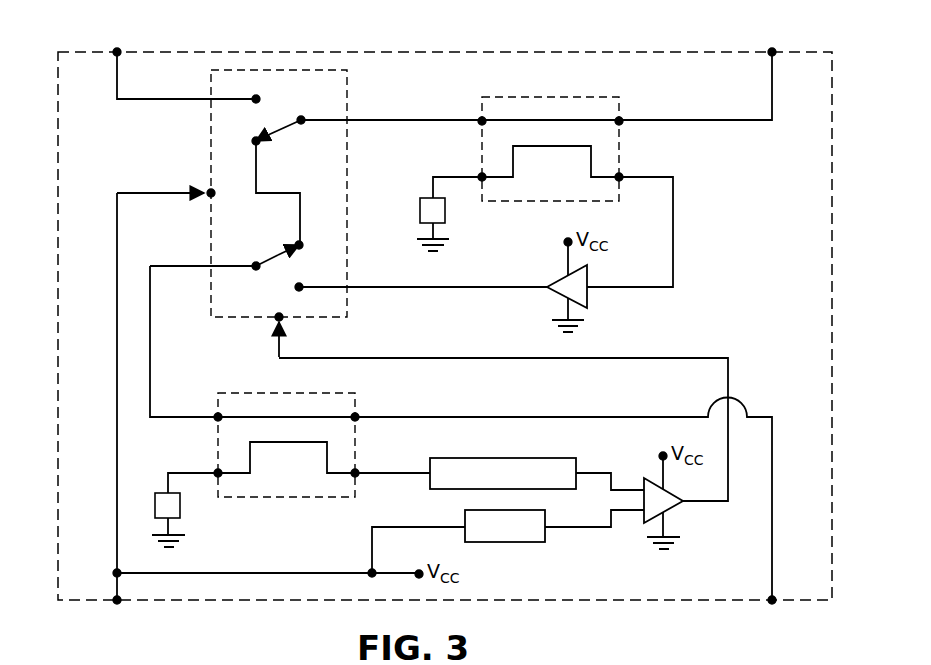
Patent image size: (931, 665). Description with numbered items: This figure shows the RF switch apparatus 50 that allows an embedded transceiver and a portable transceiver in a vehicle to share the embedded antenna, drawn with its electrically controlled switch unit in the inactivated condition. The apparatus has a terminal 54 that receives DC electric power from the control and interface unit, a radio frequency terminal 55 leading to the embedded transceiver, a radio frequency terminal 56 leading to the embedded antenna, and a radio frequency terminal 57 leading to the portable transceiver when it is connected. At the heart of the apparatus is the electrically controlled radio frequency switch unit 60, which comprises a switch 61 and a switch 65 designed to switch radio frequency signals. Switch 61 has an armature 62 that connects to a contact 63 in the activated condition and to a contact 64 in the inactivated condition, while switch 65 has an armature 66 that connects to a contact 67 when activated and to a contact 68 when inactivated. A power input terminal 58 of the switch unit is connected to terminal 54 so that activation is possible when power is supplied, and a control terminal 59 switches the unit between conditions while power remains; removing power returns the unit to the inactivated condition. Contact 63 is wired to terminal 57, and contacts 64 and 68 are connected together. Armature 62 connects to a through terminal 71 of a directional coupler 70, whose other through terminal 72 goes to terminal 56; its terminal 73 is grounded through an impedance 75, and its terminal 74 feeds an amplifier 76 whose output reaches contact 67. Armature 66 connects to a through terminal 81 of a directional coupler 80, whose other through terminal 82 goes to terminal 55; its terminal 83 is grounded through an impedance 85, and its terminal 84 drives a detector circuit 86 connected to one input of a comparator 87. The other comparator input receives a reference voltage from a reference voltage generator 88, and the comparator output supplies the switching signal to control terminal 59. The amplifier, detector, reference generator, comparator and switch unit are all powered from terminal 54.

The RF switch apparatus 50 is at (685, 0).
The terminal 54 is at (117, 600).
The terminal 55 is at (772, 600).
The terminal 56 is at (772, 52).
The terminal 57 is at (117, 52).
The power input terminal 58 is at (209, 190).
The control terminal 59 is at (323, 331).
The electrically controlled radio frequency switch unit 60 is at (359, 82).
The switch 61 is at (284, 106).
The armature 62 is at (284, 128).
The contact 63 is at (256, 99).
The contact 64 is at (256, 141).
The switch 65 is at (273, 276).
The armature 66 is at (273, 252).
The contact 67 is at (299, 287).
The contact 68 is at (299, 245).
The directional coupler 70 is at (562, 86).
The through terminal 71 is at (482, 121).
The through terminal 72 is at (619, 121).
The terminal 73 is at (482, 177).
The terminal 74 is at (619, 177).
The impedance 75 is at (420, 210).
The amplifier 76 is at (585, 305).
The directional coupler 80 is at (295, 510).
The through terminal 81 is at (218, 417).
The through terminal 82 is at (355, 417).
The terminal 83 is at (218, 473).
The terminal 84 is at (355, 473).
The impedance 85 is at (155, 503).
The detector circuit 86 is at (425, 480).
The comparator 87 is at (668, 512).
The reference voltage generator 88 is at (545, 540).